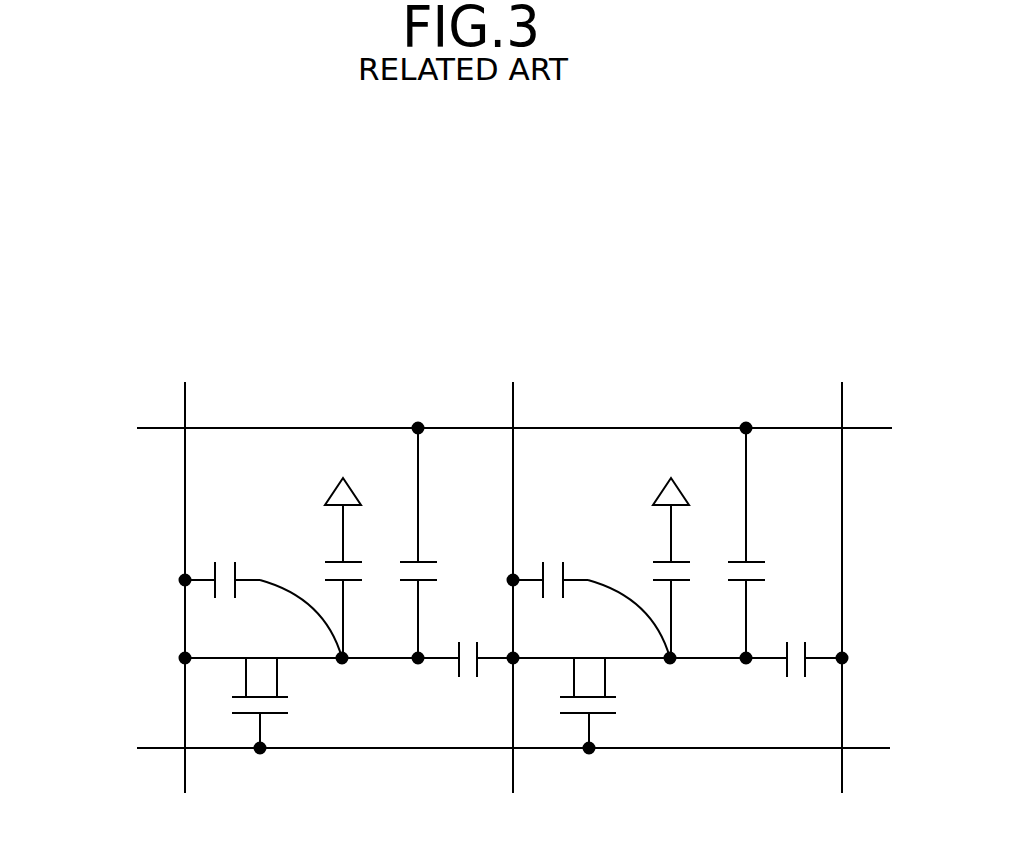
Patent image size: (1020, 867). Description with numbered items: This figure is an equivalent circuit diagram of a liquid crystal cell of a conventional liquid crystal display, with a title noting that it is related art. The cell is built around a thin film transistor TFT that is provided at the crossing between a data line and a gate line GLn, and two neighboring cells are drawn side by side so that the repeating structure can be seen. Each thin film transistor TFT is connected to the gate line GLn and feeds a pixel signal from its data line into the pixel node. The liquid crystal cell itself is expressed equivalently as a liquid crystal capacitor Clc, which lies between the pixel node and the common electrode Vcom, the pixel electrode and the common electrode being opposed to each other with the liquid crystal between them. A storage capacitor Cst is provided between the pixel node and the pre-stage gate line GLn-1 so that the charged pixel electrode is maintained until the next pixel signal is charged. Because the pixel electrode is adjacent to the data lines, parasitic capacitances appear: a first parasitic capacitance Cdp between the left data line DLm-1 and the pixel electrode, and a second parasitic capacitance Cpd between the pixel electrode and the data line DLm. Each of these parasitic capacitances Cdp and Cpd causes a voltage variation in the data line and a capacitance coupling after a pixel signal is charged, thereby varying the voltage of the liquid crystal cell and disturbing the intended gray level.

The pre-stage gate line GLn-1 is at (463, 429).
The gate line GLn is at (480, 748).
The left data line DLm-1 is at (177, 566).
The data line DLm is at (510, 570).
The first parasitic capacitance Cdp is at (427, 593).
The common electrode Vcom is at (498, 476).
The liquid crystal capacitor Clc is at (485, 581).
The storage capacitor Cst is at (582, 543).
The second parasitic capacitance Cpd is at (623, 642).
The thin film transistor TFT is at (424, 703).